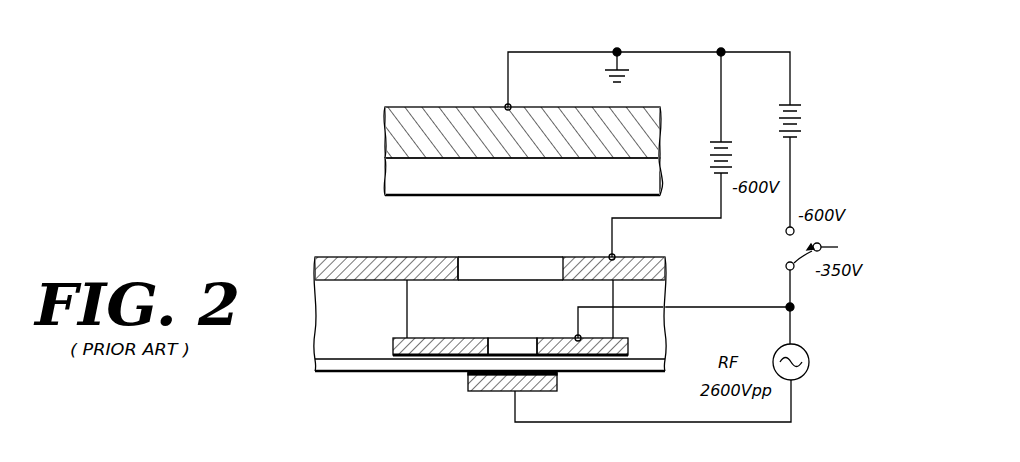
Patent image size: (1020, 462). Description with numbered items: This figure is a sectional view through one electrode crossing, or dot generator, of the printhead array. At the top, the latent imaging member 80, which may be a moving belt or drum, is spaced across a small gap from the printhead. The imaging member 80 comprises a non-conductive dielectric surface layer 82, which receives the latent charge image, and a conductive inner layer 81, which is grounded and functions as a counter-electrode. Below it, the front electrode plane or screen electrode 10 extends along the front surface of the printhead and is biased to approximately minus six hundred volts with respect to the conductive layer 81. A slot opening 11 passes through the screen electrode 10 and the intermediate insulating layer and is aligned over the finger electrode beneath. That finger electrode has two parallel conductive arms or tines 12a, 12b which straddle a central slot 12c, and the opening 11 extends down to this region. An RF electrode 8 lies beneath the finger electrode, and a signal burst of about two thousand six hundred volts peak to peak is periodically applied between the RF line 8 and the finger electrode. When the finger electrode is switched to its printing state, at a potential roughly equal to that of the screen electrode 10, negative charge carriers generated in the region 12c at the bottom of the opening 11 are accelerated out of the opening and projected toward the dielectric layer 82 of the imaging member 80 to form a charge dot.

The RF electrode 8 is at (490, 393).
The front electrode plane 10 is at (474, 292).
The slot opening 11 is at (480, 273).
The conductive arm 12a is at (405, 346).
The conductive arm 12b is at (545, 345).
The central slot 12c is at (515, 346).
The latent imaging member 80 is at (488, 147).
The conductive inner layer 81 is at (385, 122).
The dielectric surface layer 82 is at (385, 172).